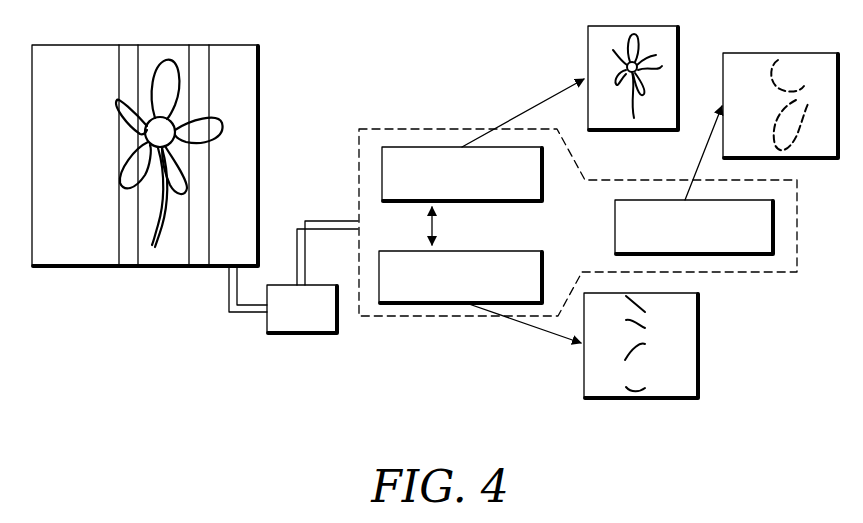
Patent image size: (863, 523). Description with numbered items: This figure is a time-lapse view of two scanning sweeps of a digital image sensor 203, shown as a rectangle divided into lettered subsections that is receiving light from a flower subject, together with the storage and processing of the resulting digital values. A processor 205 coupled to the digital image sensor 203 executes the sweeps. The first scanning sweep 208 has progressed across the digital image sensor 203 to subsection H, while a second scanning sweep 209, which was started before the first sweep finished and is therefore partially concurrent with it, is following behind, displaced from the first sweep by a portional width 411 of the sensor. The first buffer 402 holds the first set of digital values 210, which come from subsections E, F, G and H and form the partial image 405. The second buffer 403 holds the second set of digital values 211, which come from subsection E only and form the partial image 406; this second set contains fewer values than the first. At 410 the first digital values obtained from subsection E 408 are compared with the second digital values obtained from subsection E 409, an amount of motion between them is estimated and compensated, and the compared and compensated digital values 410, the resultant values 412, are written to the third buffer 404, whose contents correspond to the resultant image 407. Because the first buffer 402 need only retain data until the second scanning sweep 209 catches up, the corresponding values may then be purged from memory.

The digital image sensor 203 is at (65, 268).
The processor 205 is at (277, 333).
The first scanning sweep 208 is at (197, 266).
The second scanning sweep 209 is at (131, 266).
The first set of digital values 210 is at (451, 160).
The second set of digital values 211 is at (447, 278).
The first buffer 402 is at (522, 201).
The second buffer 403 is at (477, 251).
The third buffer 404 is at (615, 238).
The image 405 is at (660, 26).
The image 406 is at (680, 398).
The image 407 is at (795, 53).
The subsection E first digital values 408 is at (403, 147).
The subsection E second digital values 409 is at (433, 290).
The compared and compensated digital values 410 is at (425, 226).
The portional width 411 is at (736, 236).
The resultant values 412 is at (668, 212).